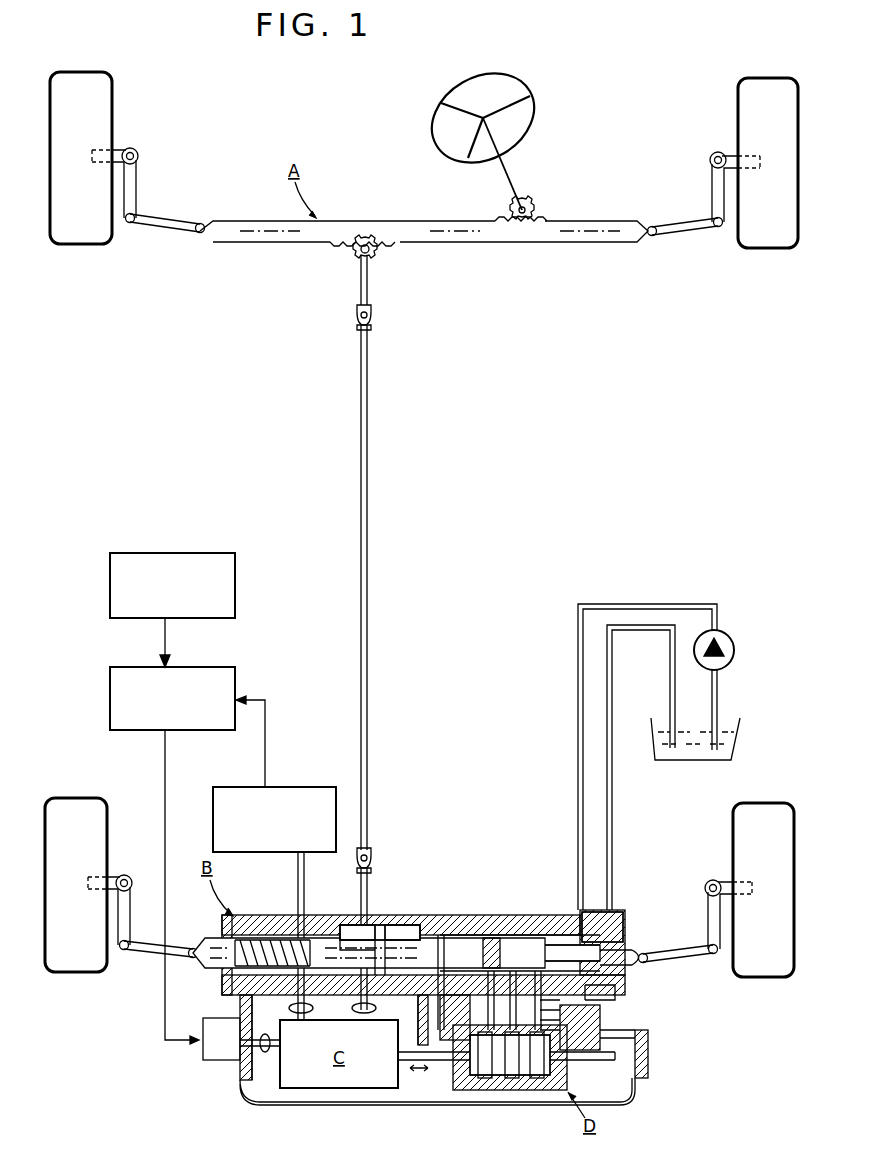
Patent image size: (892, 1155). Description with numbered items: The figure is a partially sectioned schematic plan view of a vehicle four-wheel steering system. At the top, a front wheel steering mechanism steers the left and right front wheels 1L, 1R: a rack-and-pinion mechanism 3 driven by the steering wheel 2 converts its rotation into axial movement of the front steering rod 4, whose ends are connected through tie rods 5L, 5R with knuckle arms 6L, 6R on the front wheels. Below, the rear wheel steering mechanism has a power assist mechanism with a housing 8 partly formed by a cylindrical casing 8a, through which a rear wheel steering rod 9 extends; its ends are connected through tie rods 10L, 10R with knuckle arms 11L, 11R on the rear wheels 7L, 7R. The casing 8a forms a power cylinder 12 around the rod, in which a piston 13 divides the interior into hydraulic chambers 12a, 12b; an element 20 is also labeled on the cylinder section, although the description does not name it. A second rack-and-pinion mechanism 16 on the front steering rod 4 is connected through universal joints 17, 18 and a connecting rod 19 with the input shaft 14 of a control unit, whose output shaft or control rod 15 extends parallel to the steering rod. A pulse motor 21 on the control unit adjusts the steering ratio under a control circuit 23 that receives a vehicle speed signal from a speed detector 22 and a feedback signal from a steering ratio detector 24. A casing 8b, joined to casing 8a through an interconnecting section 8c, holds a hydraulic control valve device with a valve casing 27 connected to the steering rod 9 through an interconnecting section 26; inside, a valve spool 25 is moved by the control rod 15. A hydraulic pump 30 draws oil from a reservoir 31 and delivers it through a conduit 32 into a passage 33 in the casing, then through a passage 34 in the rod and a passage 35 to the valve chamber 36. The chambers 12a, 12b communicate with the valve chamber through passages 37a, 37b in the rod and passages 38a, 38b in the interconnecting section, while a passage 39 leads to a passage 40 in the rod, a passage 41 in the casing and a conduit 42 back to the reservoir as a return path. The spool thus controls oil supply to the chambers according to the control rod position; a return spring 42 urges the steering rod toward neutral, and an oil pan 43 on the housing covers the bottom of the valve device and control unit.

The left front wheel 1L is at (112, 88).
The right front wheel 1R is at (742, 100).
The steering wheel 2 is at (521, 80).
The rack-and-pinion mechanism 3 is at (538, 203).
The front steering rod 4 is at (488, 238).
The left tie rod 5L is at (162, 228).
The right tie rod 5R is at (690, 234).
The left knuckle arm 6L is at (136, 186).
The right knuckle arm 6R is at (712, 180).
The left rear wheel 7L is at (88, 800).
The right rear wheel 7R is at (750, 805).
The housing 8 is at (494, 913).
The cylindrical casing 8a is at (505, 935).
The casing 8b is at (650, 1056).
The interconnecting section 8c is at (618, 992).
The rear wheel steering rod 9 is at (205, 942).
The left rear tie rod 10L is at (140, 955).
The right rear tie rod 10R is at (678, 962).
The left rear knuckle arm 11L is at (128, 921).
The right rear knuckle arm 11R is at (708, 918).
The power cylinder 12 is at (398, 912).
The hydraulic chamber 12a is at (343, 925).
The hydraulic chamber 12b is at (412, 925).
The piston 13 is at (380, 925).
The input shaft 14 is at (377, 1008).
The output shaft (control rod) 15 is at (412, 1062).
The second rack-and-pinion mechanism 16 is at (381, 251).
The universal joint 17 is at (373, 316).
The universal joint 18 is at (372, 852).
The connecting rod 19 is at (368, 556).
The piston 20 is at (485, 935).
The pulse motor 21 is at (218, 1060).
The speed detector 22 is at (148, 553).
The control circuit 23 is at (212, 667).
The steering ratio detector 24 is at (293, 787).
The valve spool 25 is at (496, 1078).
The interconnecting section 26 is at (590, 995).
The valve casing 27 is at (568, 1082).
The hydraulic pump 30 is at (736, 644).
The hydraulic oil reservoir 31 is at (735, 734).
The conduit 32 is at (578, 700).
The passage 33 is at (538, 960).
The passage 34 is at (513, 965).
The passage 35 is at (545, 1008).
The valve chamber 36 is at (536, 1078).
The passage 37a is at (441, 930).
The passage 37b is at (490, 965).
The passage 38a is at (470, 1010).
The passage 38b is at (600, 1015).
The passage 39 is at (556, 1030).
The passage 40 is at (634, 950).
The passage 41 is at (613, 912).
The conduit / return spring 42 is at (612, 786).
The oil pan 43 is at (626, 1106).